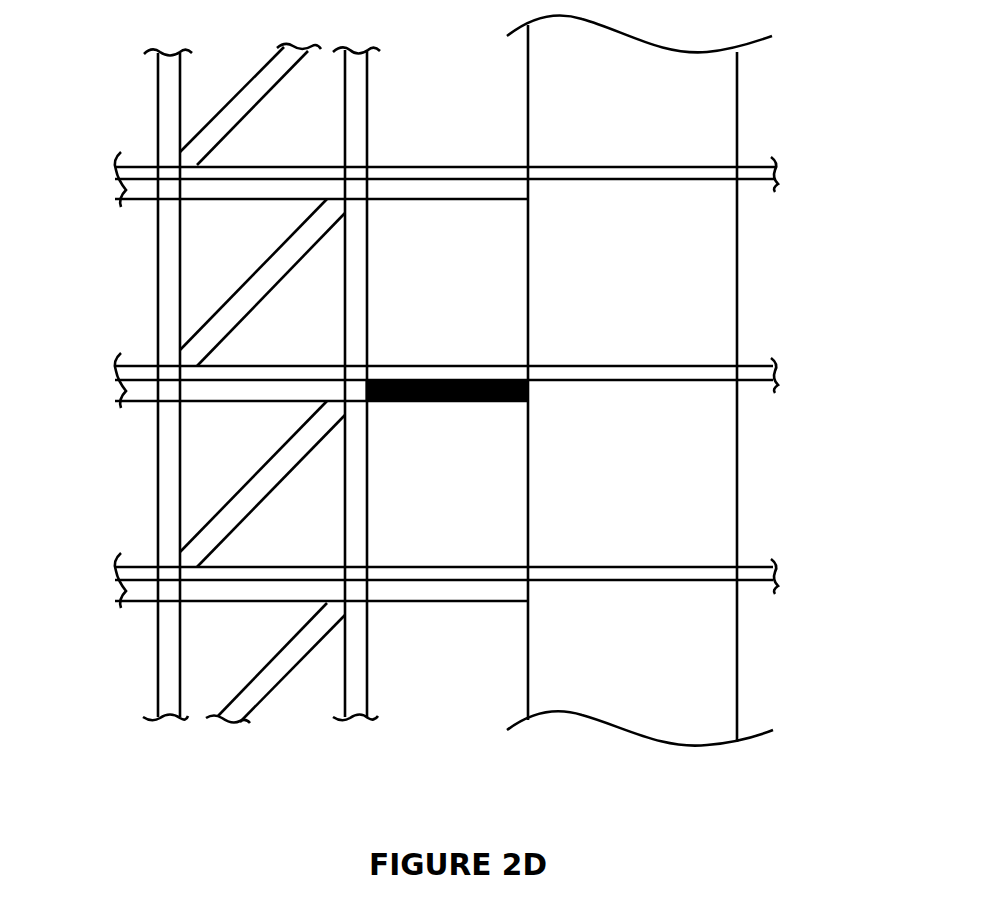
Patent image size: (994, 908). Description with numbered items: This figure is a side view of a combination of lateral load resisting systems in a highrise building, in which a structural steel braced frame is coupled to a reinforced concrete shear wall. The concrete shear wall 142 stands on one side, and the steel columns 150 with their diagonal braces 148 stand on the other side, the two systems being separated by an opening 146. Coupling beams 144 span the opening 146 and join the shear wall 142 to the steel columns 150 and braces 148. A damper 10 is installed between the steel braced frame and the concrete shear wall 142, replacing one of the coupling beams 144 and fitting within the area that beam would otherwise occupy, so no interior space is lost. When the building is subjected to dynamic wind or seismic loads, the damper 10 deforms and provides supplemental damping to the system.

The damper 10 is at (441, 401).
The concrete shear wall 142 is at (492, 312).
The coupling beam 144 is at (441, 190).
The opening 146 is at (670, 476).
The brace 148 is at (262, 285).
The steel column 150 is at (172, 461).